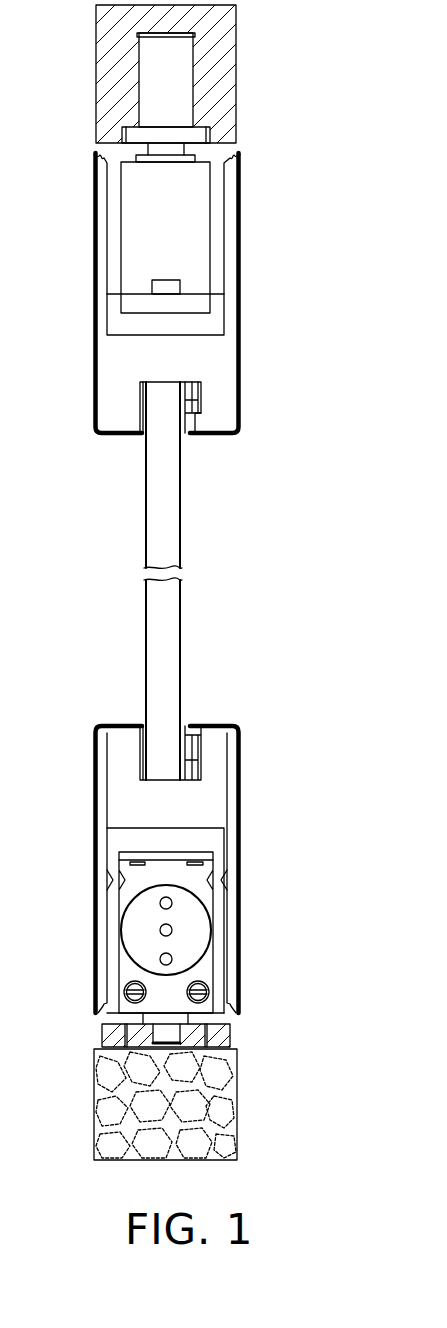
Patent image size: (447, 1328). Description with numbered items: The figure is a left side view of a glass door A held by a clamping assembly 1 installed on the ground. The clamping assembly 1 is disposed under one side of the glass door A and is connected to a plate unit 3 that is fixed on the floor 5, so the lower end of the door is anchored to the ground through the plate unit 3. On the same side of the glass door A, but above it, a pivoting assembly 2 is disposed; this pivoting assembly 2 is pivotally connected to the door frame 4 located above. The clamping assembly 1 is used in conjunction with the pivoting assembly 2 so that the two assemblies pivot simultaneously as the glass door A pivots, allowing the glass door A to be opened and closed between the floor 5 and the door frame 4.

The clamping assembly 1 is at (253, 788).
The pivoting assembly 2 is at (253, 195).
The plate unit 3 is at (230, 1037).
The door frame 4 is at (236, 55).
The floor 5 is at (237, 1105).
The glass door A is at (163, 643).